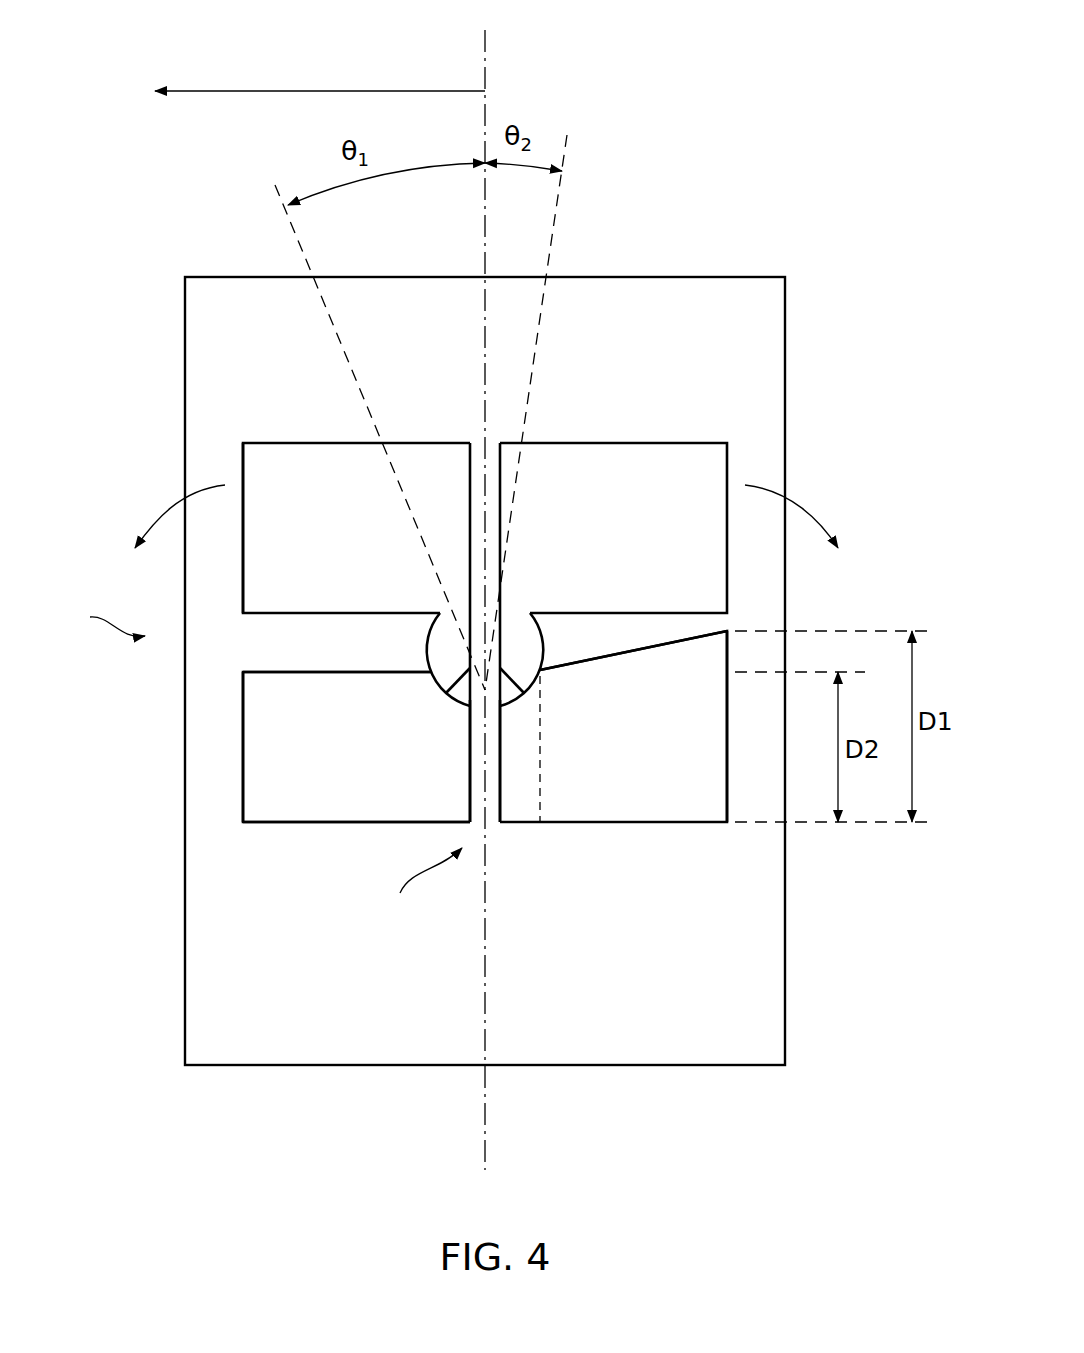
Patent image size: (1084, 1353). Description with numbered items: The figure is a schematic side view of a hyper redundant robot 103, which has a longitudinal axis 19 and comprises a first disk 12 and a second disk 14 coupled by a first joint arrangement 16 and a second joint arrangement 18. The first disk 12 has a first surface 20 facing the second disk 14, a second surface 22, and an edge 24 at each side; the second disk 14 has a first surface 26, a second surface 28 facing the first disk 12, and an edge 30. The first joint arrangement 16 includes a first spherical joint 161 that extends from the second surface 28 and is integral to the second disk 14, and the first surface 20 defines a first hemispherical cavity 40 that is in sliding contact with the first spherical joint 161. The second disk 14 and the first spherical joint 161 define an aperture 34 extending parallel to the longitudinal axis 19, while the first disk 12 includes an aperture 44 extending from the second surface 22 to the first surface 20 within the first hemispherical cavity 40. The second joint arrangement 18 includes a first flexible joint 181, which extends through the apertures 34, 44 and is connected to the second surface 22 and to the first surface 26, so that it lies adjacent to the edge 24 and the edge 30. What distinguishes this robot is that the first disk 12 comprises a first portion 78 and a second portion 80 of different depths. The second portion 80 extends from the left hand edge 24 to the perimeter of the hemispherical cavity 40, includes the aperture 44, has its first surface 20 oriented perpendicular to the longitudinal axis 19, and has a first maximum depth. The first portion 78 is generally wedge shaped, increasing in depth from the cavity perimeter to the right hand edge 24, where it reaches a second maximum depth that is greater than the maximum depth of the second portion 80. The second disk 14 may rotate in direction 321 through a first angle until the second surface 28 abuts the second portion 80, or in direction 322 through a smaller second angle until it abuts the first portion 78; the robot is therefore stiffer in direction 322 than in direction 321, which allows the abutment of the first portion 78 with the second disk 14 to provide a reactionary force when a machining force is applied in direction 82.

The first disk 12 is at (255, 738).
The second disk 14 is at (285, 460).
The first joint arrangement 16 is at (99, 618).
The second joint arrangement 18 is at (422, 885).
The longitudinal axis 19 is at (487, 1118).
The first surface of the first disk 20 is at (280, 670).
The second surface of the first disk 22 is at (518, 823).
The edge of the first disk 24 is at (240, 767).
The first surface of the second disk 26 is at (605, 443).
The second surface of the second disk 28 is at (600, 615).
The edge of the second disk 30 is at (243, 478).
The aperture 34 is at (470, 490).
The first hemispherical cavity 40 is at (436, 683).
The aperture 44 is at (470, 782).
The first portion 78 is at (667, 800).
The second portion 80 is at (337, 823).
The direction 82 is at (410, 91).
The hyper redundant robot 103 is at (838, 195).
The first spherical joint 161 is at (432, 645).
The first flexible joint 181 is at (470, 745).
The direction 321 is at (143, 527).
The direction 322 is at (822, 525).